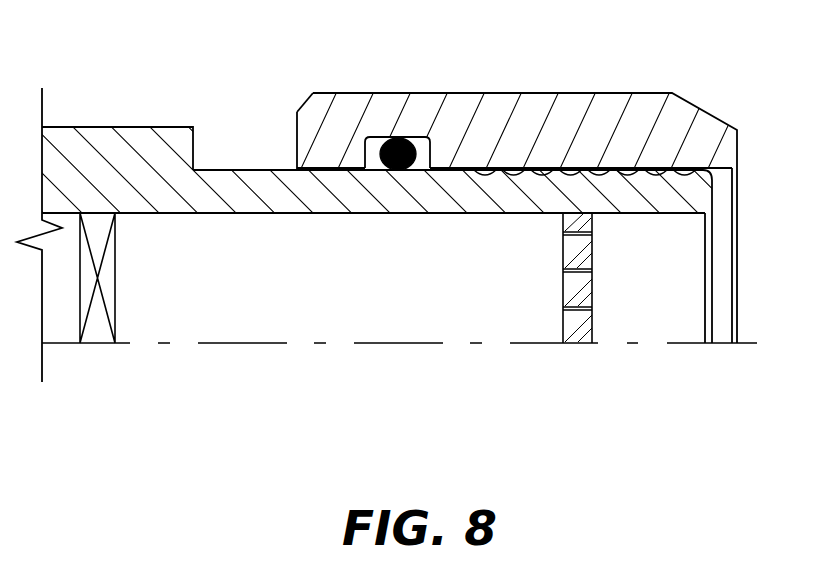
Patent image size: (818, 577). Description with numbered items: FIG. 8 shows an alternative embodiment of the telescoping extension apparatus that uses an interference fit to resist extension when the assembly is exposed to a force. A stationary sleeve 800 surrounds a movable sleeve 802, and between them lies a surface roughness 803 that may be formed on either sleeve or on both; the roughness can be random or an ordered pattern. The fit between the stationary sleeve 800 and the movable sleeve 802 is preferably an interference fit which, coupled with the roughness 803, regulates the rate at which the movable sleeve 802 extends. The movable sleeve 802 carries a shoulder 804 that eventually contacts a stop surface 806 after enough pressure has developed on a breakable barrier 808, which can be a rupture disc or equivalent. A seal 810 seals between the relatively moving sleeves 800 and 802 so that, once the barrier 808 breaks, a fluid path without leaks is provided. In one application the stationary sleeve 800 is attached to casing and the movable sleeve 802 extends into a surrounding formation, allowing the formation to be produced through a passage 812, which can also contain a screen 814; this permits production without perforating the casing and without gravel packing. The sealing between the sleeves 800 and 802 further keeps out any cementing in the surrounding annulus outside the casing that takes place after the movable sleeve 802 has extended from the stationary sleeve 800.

The stationary sleeve 800 is at (700, 108).
The movable sleeve 802 is at (712, 193).
The surface roughness 803 is at (537, 170).
The shoulder 804 is at (196, 150).
The stop surface 806 is at (297, 140).
The breakable barrier 808 is at (98, 335).
The seal 810 is at (397, 140).
The passage 812 is at (675, 283).
The screen 814 is at (592, 313).